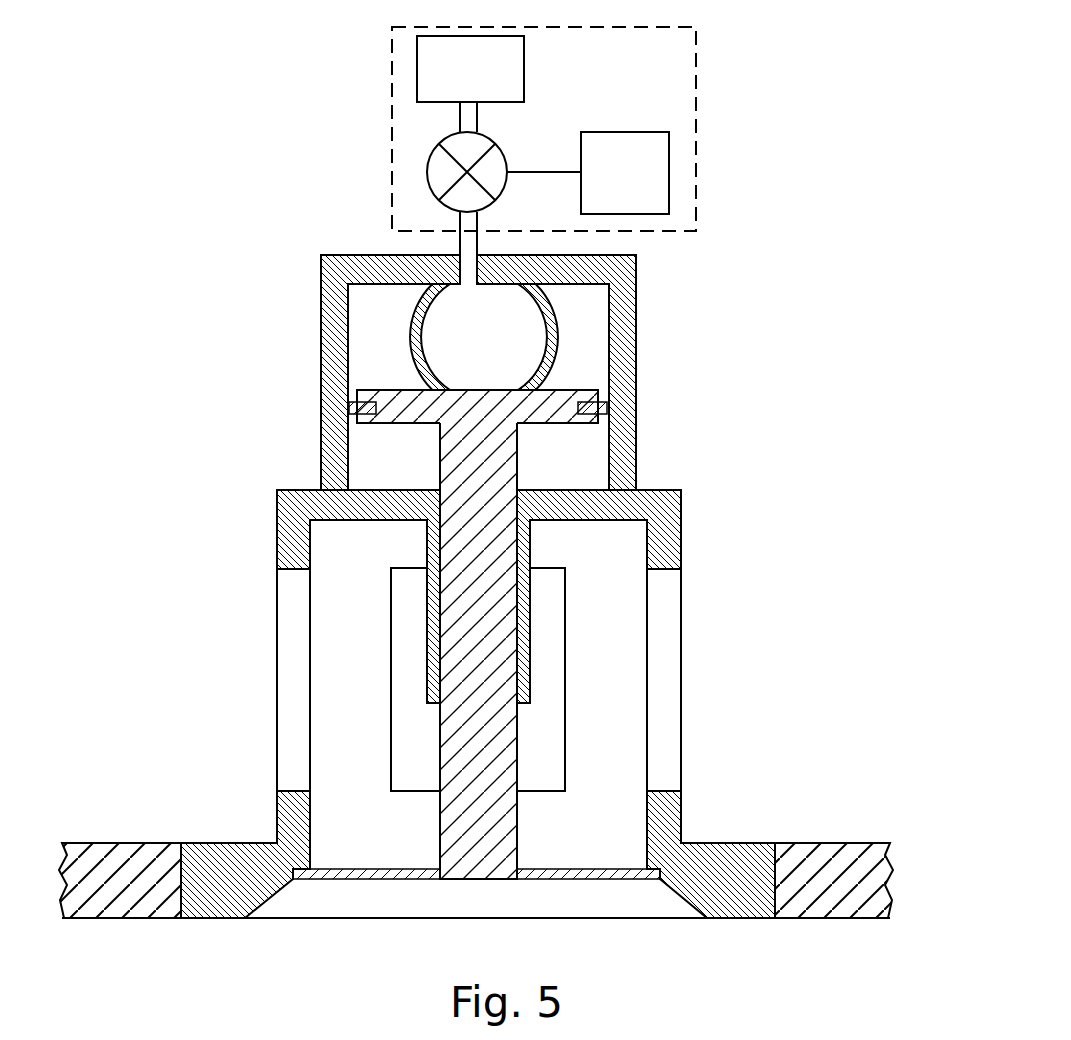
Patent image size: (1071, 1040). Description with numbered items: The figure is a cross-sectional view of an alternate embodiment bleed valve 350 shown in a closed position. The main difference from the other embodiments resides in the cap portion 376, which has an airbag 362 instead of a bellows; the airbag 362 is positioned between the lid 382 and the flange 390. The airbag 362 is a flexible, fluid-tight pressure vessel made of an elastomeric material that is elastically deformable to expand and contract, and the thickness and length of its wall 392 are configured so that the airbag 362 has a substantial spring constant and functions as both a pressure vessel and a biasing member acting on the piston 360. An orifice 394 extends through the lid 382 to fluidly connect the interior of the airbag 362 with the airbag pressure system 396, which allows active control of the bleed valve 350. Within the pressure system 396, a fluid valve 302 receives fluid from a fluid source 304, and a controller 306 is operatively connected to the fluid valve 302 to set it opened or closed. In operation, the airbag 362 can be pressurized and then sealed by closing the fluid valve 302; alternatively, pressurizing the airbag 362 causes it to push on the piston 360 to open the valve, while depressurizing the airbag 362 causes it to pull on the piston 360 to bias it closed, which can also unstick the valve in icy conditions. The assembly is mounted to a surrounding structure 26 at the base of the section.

The base structure 26 is at (813, 843).
The fluid valve 302 is at (505, 157).
The fluid source 304 is at (524, 67).
The controller 306 is at (617, 132).
The bleed valve 350 is at (780, 244).
The piston 360 is at (518, 836).
The airbag 362 is at (481, 337).
The cap portion 376 is at (728, 252).
The lid 382 is at (352, 255).
The flange 390 is at (410, 423).
The wall 392 is at (556, 343).
The orifice 394 is at (474, 263).
The airbag pressure system 396 is at (696, 62).